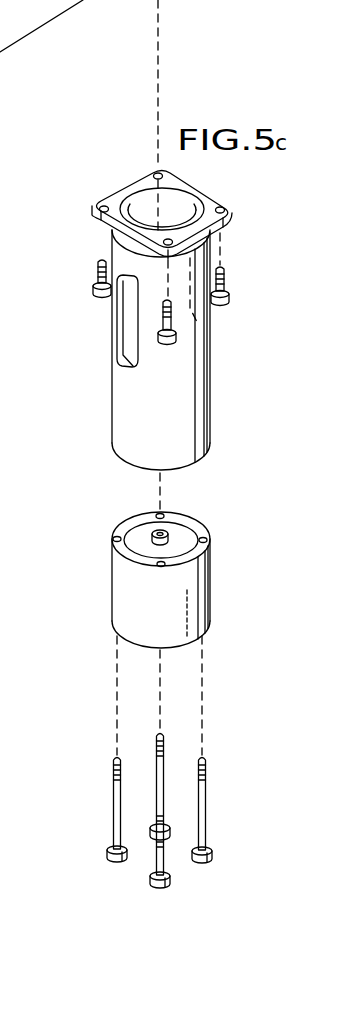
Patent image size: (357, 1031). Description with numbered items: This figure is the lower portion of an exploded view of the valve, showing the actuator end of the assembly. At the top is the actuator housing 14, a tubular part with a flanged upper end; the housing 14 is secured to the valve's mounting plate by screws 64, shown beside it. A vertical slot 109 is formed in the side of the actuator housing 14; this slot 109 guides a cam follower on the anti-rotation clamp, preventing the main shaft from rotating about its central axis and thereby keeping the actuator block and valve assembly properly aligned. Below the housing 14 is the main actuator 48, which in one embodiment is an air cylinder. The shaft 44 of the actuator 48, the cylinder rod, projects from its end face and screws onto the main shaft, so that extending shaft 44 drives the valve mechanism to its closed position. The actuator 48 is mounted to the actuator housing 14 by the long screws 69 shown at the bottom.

The actuator housing 14 is at (112, 419).
The screws 64 is at (93, 296).
The vertical slot 109 is at (210, 323).
The shaft 44 is at (152, 535).
The actuator 48 is at (112, 573).
The screws 69 is at (157, 801).